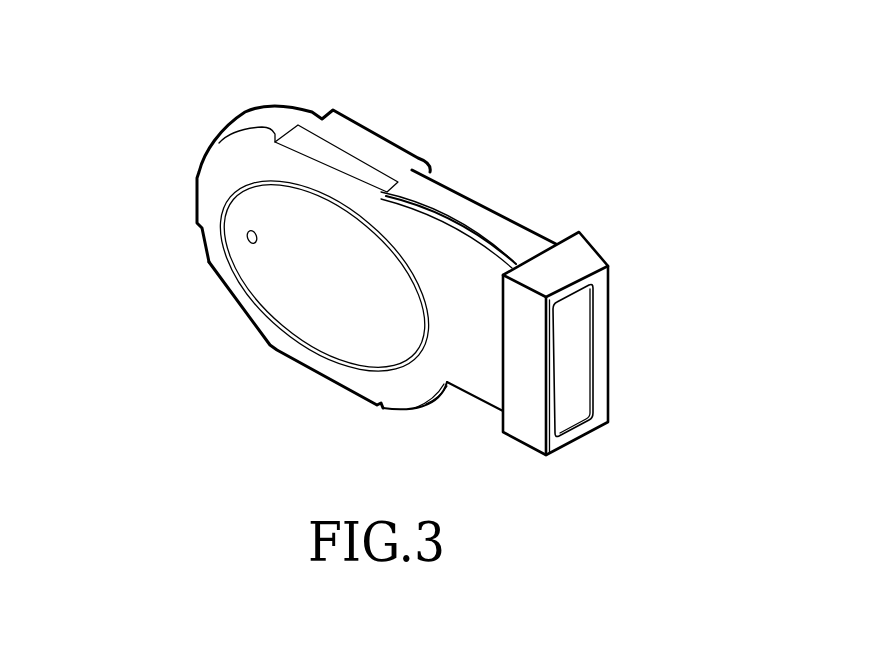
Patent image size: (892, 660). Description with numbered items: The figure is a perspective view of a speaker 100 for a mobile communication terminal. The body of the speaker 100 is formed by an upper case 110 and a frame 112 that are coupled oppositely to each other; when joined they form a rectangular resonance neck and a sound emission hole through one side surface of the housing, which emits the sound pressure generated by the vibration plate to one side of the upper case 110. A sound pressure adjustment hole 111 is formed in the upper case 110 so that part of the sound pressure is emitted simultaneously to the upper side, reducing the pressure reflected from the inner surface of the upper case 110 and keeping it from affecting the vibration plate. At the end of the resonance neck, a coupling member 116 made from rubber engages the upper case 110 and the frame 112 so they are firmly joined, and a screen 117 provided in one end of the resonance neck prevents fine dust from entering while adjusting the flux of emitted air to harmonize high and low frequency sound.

The speaker 100 is at (467, 156).
The upper case 110 is at (212, 194).
The sound pressure adjustment hole 111 is at (248, 239).
The frame 112 is at (508, 221).
The coupling member 116 is at (590, 257).
The screen 117 is at (590, 351).